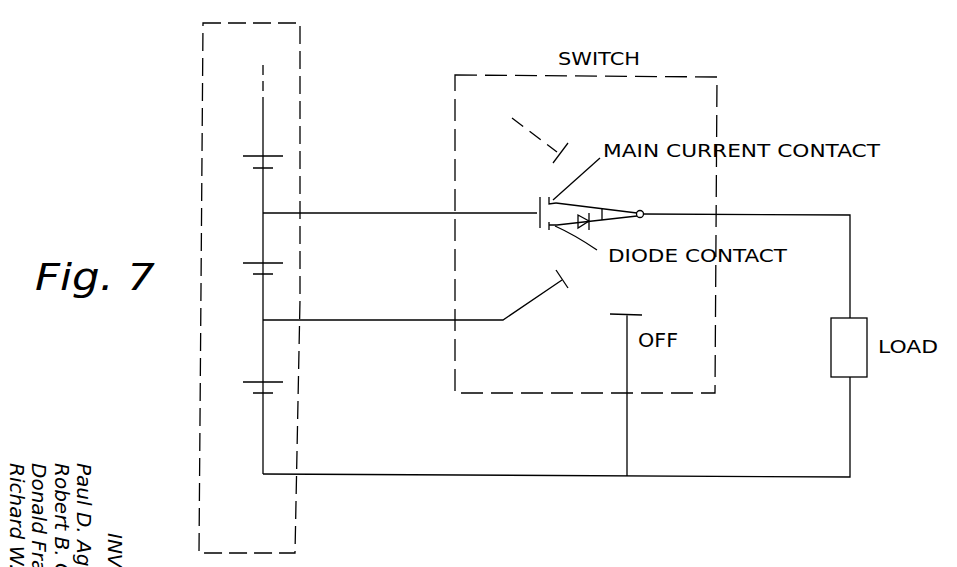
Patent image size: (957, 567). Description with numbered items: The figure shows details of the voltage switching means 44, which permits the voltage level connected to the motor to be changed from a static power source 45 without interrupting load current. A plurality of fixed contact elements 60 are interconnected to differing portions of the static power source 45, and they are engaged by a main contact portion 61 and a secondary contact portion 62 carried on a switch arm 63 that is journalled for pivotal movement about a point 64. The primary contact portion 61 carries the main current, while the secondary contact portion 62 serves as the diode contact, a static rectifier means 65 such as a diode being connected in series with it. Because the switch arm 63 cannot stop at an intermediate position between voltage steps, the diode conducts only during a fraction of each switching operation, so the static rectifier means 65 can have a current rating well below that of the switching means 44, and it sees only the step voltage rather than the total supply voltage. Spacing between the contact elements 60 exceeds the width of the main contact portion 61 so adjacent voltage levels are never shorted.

The voltage switching means 44 is at (700, 75).
The static power source 45 is at (302, 43).
The fixed contact elements 60 is at (555, 162).
The main contact portion 61 is at (555, 202).
The secondary contact portion 62 is at (548, 226).
The switch arm 63 is at (612, 207).
The pivot point 64 is at (644, 211).
The static rectifier means 65 is at (589, 226).